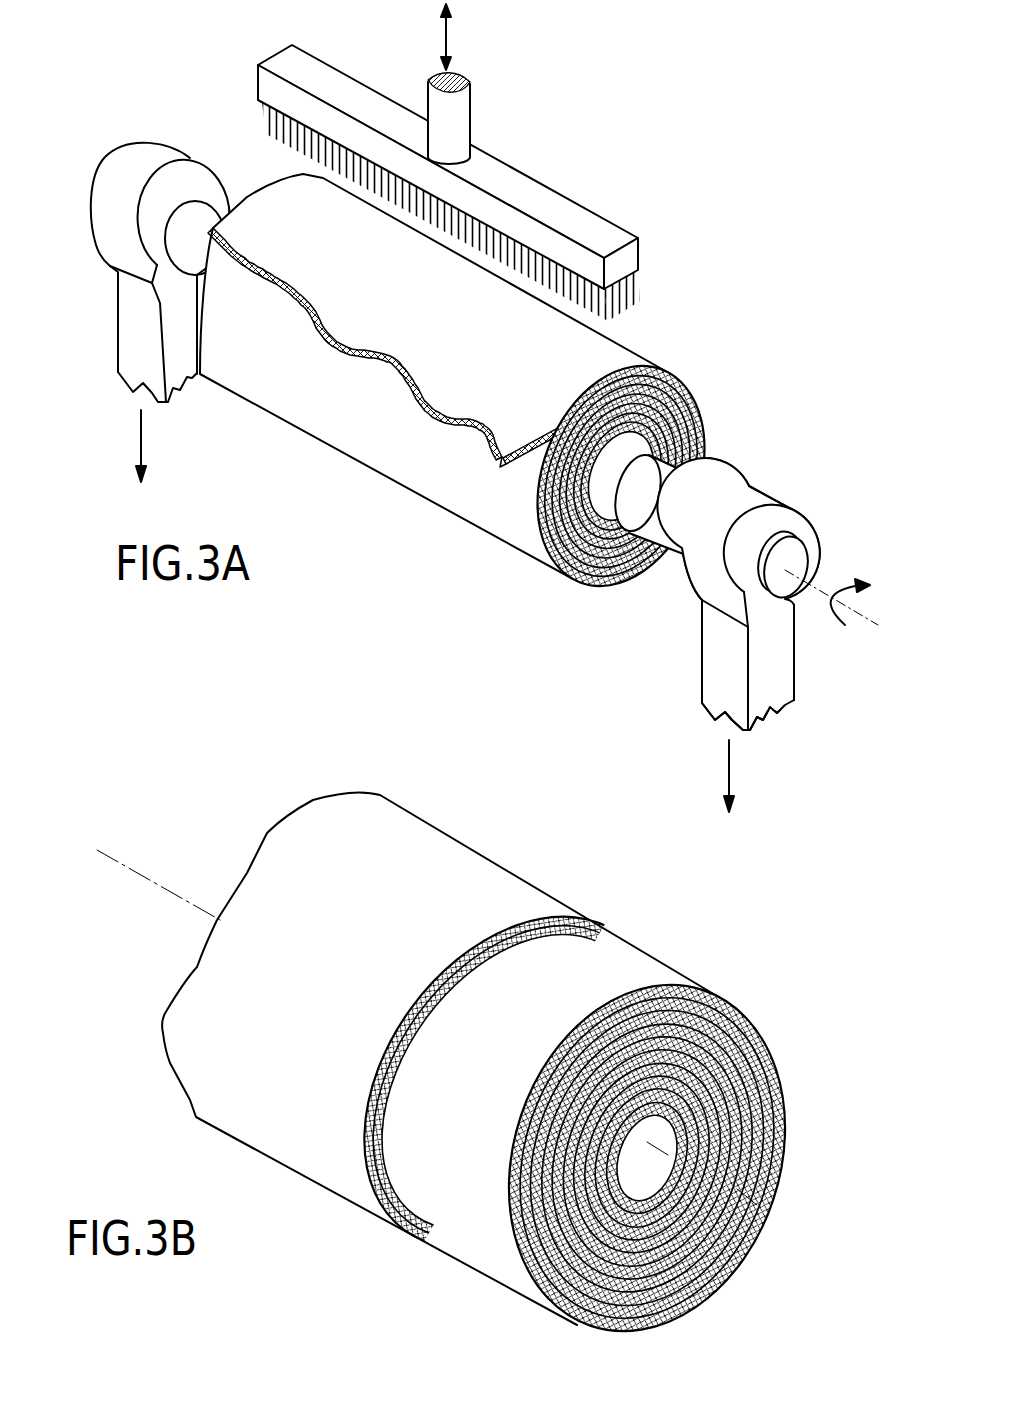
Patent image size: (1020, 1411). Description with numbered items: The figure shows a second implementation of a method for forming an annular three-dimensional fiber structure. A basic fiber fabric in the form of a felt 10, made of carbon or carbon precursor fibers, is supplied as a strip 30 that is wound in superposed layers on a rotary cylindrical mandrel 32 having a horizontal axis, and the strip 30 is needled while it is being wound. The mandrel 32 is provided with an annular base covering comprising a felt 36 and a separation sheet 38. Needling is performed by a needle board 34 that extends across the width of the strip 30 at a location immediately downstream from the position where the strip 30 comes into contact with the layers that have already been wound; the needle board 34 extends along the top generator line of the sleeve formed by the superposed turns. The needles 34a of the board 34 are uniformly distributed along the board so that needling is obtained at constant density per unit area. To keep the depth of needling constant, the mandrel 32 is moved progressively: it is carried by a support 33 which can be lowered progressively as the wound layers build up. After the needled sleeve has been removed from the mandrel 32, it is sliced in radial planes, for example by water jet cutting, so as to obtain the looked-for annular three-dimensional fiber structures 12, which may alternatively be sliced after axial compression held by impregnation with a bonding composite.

In FIG. 3A, the felt 10 is at (415, 392).
In FIG. 3B, the three-dimensional fiber structure 12 is at (452, 1242).
In FIG. 3A, the strip 30 is at (358, 268).
In FIG. 3A, the rotary cylindrical mandrel 32 is at (192, 255).
In FIG. 3A, the support 33 is at (447, 399).
In FIG. 3A, the needle board 34 is at (570, 222).
In FIG. 3A, the needles 34a is at (622, 300).
In FIG. 3A, the felt 36 is at (632, 484).
In FIG. 3A, the separation sheet 38 is at (550, 572).